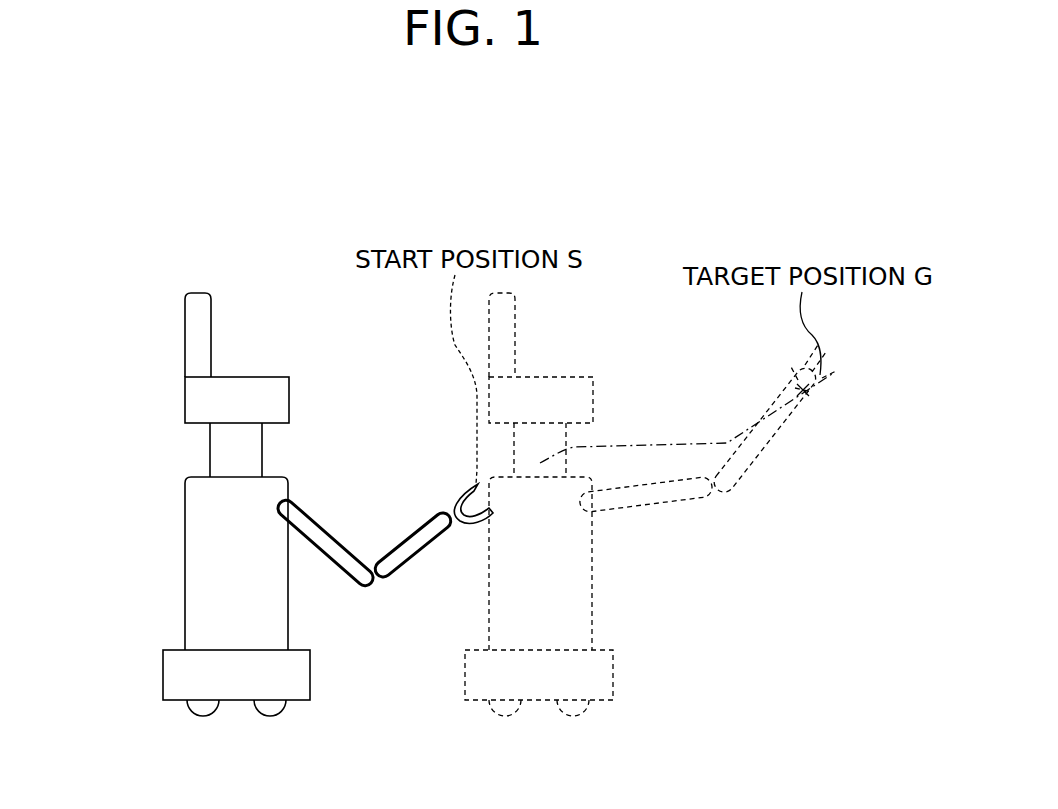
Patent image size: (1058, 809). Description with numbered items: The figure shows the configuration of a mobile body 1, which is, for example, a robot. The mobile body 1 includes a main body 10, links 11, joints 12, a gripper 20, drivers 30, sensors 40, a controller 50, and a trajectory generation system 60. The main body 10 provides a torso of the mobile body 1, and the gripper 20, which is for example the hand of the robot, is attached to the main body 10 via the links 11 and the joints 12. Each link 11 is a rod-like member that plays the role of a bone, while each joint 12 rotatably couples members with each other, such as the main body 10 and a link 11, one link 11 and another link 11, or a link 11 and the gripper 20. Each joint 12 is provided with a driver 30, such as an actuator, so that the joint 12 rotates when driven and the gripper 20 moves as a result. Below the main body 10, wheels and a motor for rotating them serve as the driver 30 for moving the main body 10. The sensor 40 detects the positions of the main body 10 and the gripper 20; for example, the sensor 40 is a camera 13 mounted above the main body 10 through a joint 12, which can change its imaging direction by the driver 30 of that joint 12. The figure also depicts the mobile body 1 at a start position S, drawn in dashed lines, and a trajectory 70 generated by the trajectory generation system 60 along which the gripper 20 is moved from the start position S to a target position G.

The mobile body 1 is at (404, 213).
The main body 10 is at (186, 506).
The links 11 is at (311, 528).
The joints 12 is at (208, 476).
The camera 13 is at (473, 503).
The gripper 20 is at (463, 483).
The drivers 30 is at (268, 712).
The sensors 40 is at (289, 377).
The controller 50 is at (186, 401).
The trajectory generation system 60 is at (198, 335).
The trajectory 70 is at (650, 445).